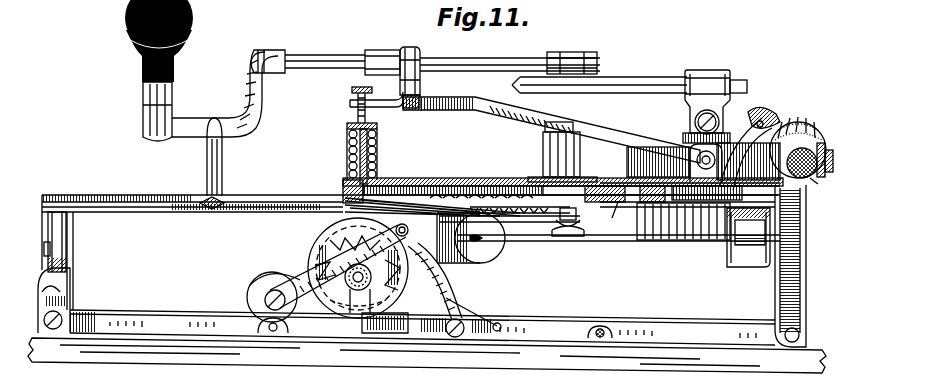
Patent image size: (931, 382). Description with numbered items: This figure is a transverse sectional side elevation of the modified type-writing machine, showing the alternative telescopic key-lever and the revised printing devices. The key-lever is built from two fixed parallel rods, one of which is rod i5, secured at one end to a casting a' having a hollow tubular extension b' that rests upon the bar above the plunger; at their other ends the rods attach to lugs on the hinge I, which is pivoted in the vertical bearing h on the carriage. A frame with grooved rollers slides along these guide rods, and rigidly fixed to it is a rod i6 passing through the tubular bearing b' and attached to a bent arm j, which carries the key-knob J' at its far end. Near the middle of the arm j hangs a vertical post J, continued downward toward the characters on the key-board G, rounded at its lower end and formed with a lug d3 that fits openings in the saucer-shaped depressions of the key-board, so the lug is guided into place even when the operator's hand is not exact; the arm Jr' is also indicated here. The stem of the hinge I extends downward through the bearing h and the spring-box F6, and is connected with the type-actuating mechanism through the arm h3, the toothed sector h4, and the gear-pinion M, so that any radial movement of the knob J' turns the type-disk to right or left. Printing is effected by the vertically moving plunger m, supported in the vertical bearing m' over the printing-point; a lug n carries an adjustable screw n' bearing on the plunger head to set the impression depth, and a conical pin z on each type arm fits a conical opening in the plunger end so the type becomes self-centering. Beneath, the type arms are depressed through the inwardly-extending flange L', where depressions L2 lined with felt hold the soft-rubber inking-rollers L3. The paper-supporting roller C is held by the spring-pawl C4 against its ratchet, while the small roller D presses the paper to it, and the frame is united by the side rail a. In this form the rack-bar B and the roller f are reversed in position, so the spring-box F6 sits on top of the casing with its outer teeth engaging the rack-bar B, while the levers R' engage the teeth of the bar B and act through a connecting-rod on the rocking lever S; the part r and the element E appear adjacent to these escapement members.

The key-knob J' is at (143, 70).
The bent arm j is at (225, 94).
The vertical post J is at (219, 166).
The rod i6 is at (305, 66).
The hollow tubular extension b' is at (382, 41).
The casting a' is at (399, 77).
The adjustable screw n' is at (353, 87).
The lug n is at (365, 107).
The plunger m is at (347, 153).
The vertical bearing m' is at (375, 154).
The conical pin z is at (414, 182).
The lever arm Jr' is at (551, 130).
The parallel rod i5 is at (640, 90).
The hinge I is at (715, 99).
The lever R' is at (750, 146).
The vertical bearing h is at (722, 143).
The rocking lever S is at (788, 122).
The spring-box F6 is at (627, 165).
The arm h3 is at (625, 180).
The key-board G is at (150, 186).
The lug d3 is at (206, 212).
The roller f is at (48, 236).
The side rail a is at (67, 300).
The gear wheel E is at (350, 268).
The small roller D is at (247, 294).
The paper-supporting roller C is at (408, 292).
The spring-pawl C4 is at (454, 290).
The gear-pinion M is at (584, 212).
The toothed sector h4 is at (624, 216).
The inwardly-extending flange L' is at (683, 234).
The depression L2 is at (748, 262).
The inking-roller L3 is at (750, 232).
The ratchet pin r is at (812, 180).
The rack-bar B is at (806, 205).